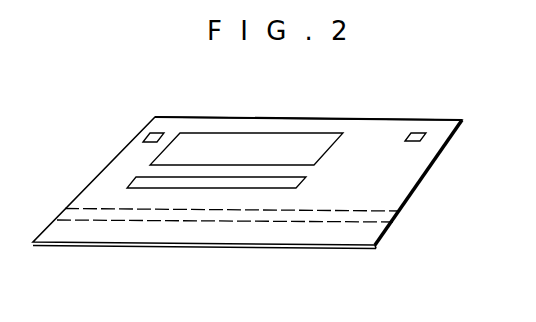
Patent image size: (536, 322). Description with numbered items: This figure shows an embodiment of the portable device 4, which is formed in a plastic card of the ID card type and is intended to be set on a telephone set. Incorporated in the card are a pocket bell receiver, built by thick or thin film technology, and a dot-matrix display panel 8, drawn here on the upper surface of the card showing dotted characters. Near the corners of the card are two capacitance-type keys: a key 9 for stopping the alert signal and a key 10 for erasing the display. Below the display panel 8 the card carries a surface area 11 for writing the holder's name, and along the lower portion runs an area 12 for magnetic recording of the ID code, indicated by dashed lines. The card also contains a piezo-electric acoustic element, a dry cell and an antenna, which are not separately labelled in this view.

The portable device 4 is at (122, 247).
The dot-matrix display panel 8 is at (253, 131).
The key for stopping the alert signal 9 is at (421, 133).
The key for erasing the display 10 is at (143, 135).
The surface area for writing the holder's name 11 is at (130, 185).
The area for magnetic recording of the ID code 12 is at (398, 212).